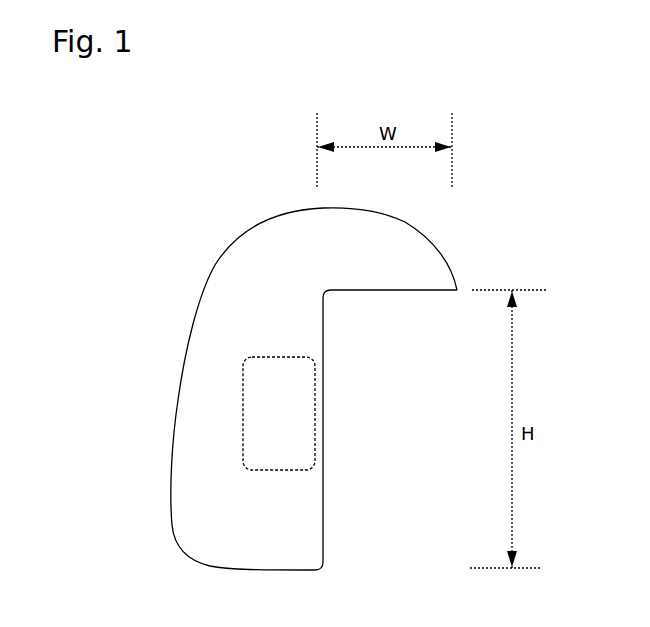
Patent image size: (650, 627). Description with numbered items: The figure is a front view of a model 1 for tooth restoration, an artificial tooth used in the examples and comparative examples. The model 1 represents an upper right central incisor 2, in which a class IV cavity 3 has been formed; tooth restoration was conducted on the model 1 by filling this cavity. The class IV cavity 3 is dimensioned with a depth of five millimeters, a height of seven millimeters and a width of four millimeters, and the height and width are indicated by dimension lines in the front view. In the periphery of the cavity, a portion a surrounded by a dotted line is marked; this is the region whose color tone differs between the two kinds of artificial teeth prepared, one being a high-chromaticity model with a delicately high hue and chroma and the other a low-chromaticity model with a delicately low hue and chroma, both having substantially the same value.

The model for tooth restoration 1 is at (359, 355).
The upper right central incisor 2 is at (195, 488).
The class IV cavity 3 is at (324, 459).
The portion surrounded by a dotted line a is at (243, 395).